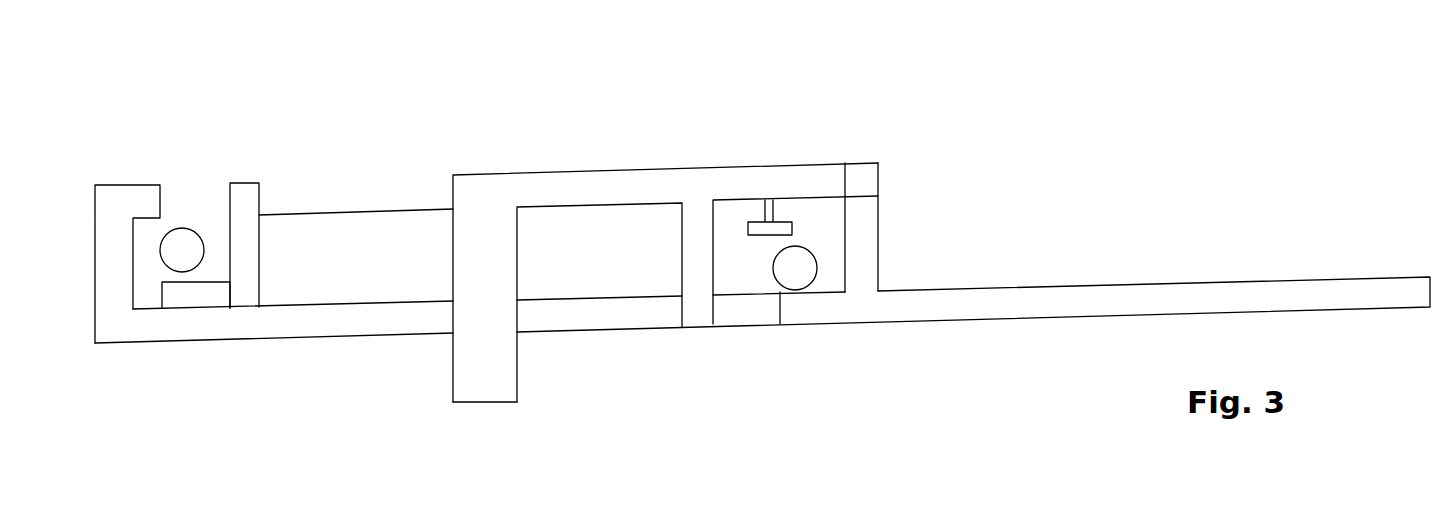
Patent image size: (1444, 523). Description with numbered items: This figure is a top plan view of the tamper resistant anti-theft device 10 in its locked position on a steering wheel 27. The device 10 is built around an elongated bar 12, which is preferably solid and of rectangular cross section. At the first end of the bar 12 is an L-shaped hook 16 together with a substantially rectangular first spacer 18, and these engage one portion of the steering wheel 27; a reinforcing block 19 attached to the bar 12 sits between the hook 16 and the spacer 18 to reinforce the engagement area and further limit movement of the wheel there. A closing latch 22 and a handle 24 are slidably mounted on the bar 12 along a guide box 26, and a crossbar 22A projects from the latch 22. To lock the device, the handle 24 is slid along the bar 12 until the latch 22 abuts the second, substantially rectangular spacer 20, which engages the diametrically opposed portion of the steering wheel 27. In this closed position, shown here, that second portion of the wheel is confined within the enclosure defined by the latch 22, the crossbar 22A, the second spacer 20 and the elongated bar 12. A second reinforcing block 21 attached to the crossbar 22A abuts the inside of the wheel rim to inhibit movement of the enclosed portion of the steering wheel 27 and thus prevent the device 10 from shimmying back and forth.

The tamper resistant anti-theft device 10 is at (1119, 208).
The elongated bar 12 is at (1198, 280).
The L-shaped hook 16 is at (148, 183).
The first spacer 18 is at (243, 183).
The reinforcing block 19 is at (195, 297).
The second spacer 20 is at (880, 220).
The second reinforcing block 21 is at (752, 308).
The closing latch 22 is at (638, 170).
The crossbar 22A is at (715, 243).
The handle 24 is at (518, 401).
The guide box 26 is at (333, 212).
The steering wheel 27 is at (186, 228).